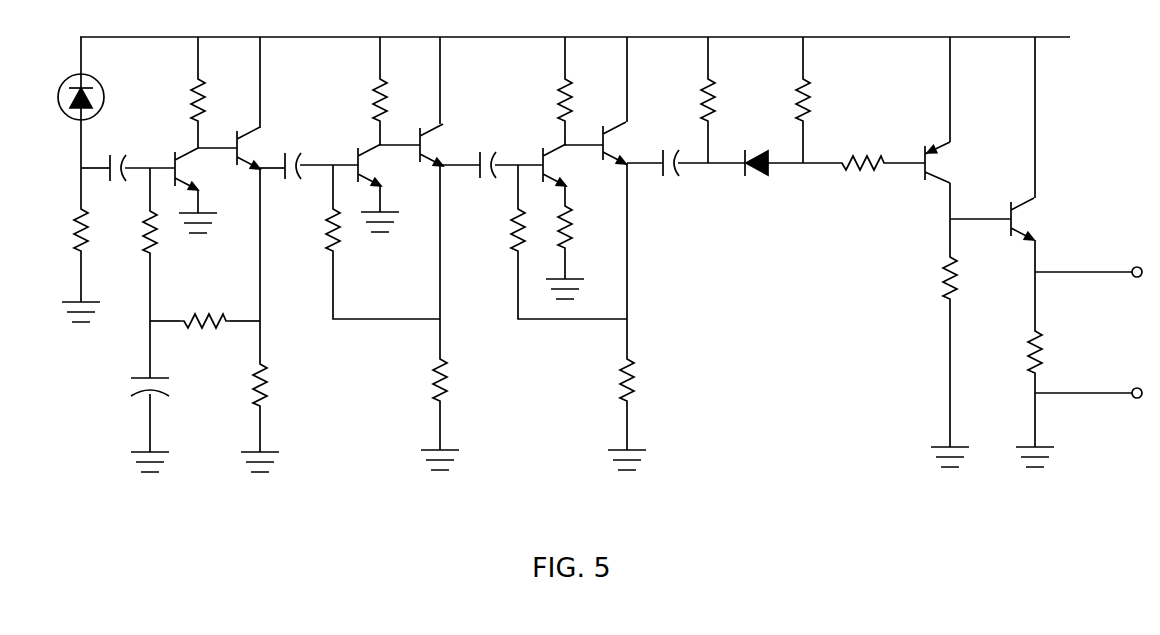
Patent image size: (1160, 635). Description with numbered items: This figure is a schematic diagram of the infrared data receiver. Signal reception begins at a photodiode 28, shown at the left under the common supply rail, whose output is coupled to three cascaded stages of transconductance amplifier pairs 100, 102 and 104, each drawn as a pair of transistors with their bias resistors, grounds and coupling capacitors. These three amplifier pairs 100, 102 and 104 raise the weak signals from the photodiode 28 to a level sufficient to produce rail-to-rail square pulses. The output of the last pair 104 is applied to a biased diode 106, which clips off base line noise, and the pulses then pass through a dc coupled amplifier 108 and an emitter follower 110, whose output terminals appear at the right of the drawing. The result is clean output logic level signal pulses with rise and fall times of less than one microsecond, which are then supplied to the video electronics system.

The photodiode 28 is at (66, 122).
The transconductance amplifier pair 100 is at (244, 190).
The transconductance amplifier pair 102 is at (424, 190).
The transconductance amplifier pair 104 is at (607, 190).
The biased diode 106 is at (756, 172).
The dc coupled amplifier 108 is at (943, 186).
The emitter follower 110 is at (1027, 217).